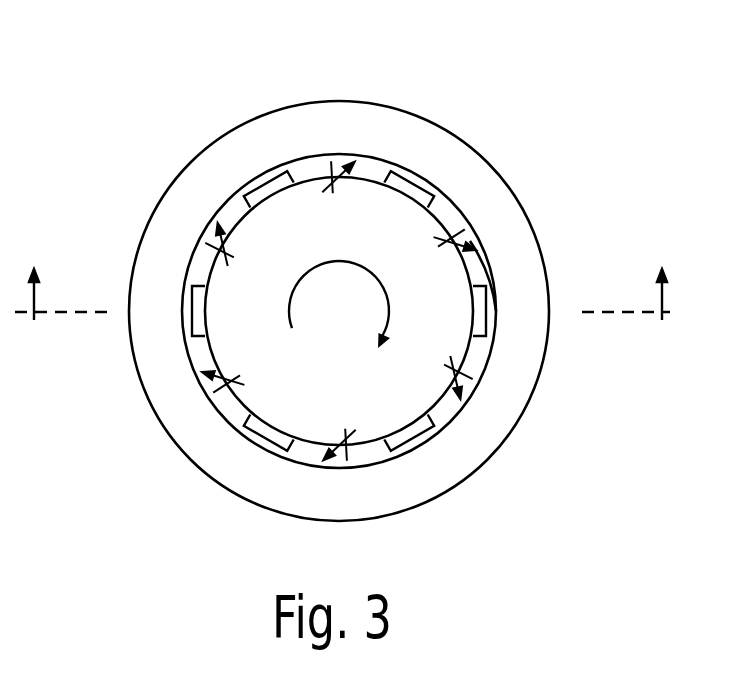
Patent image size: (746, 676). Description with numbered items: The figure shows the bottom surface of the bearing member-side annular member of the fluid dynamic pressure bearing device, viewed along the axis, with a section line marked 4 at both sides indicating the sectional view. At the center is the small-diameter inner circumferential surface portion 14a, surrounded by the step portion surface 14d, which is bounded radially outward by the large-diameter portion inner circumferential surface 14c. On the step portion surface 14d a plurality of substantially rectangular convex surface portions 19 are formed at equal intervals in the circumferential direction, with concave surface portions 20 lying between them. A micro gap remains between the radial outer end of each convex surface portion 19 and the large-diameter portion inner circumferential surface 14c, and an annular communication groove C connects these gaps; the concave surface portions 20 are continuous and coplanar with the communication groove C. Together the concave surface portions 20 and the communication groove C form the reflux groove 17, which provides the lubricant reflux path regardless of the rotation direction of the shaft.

The convex surface portion 19 is at (268, 180).
The concave surface portion 20 is at (368, 172).
The annular communication groove C is at (420, 187).
The small-diameter inner circumferential surface portion 14a is at (244, 404).
The large-diameter portion inner circumferential surface 14c is at (200, 270).
The step portion surface 14d is at (487, 268).
The reflux groove 17 is at (475, 371).
The section line 4- 4 is at (343, 273).